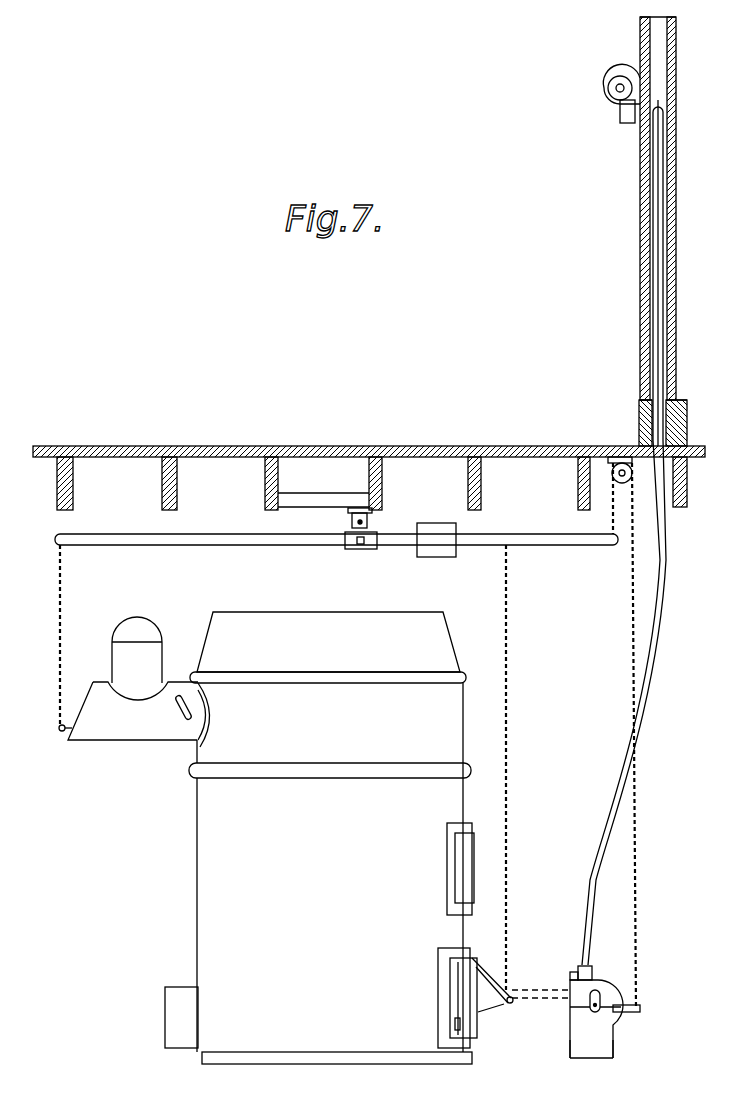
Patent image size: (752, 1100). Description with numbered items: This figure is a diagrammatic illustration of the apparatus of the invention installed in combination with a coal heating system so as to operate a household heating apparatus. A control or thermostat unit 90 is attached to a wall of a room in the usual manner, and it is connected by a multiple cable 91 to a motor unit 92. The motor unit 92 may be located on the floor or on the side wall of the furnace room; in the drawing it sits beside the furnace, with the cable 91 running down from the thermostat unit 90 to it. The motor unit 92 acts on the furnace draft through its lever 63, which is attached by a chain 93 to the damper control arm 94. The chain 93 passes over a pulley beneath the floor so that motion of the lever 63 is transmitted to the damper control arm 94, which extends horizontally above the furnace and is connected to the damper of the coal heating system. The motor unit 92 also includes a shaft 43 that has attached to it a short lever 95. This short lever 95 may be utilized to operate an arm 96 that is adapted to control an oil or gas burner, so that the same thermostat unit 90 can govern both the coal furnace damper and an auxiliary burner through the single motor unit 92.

The control or thermostat unit 90 is at (616, 122).
The multiple cable 91 is at (666, 617).
The motor unit 92 is at (606, 982).
The chain 93 is at (637, 830).
The damper control arm 94 is at (524, 535).
The short lever 95 is at (600, 1002).
The arm 96 is at (537, 999).
The lever 63 is at (641, 1010).
The shaft 43 is at (618, 1012).